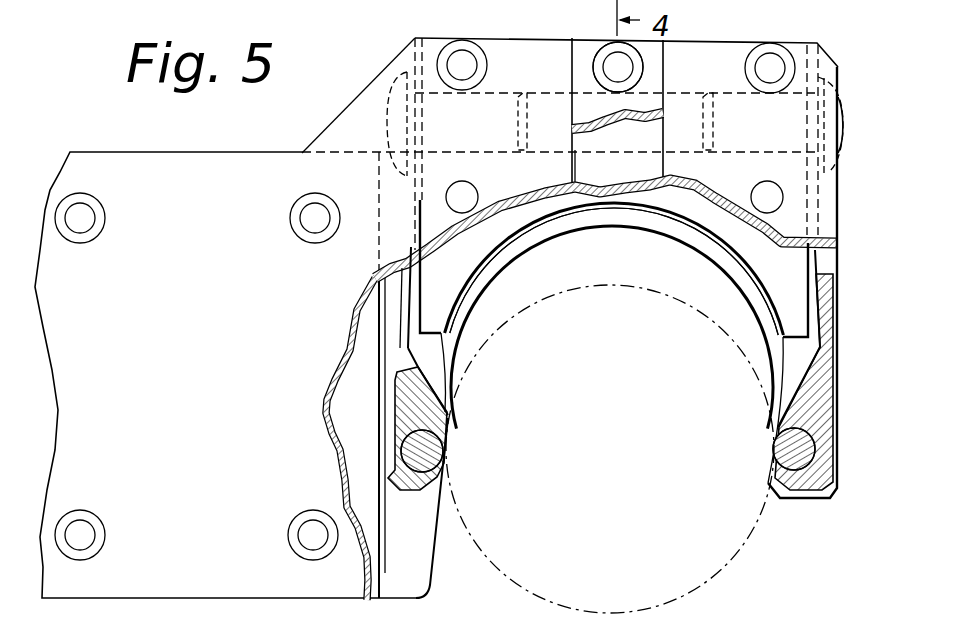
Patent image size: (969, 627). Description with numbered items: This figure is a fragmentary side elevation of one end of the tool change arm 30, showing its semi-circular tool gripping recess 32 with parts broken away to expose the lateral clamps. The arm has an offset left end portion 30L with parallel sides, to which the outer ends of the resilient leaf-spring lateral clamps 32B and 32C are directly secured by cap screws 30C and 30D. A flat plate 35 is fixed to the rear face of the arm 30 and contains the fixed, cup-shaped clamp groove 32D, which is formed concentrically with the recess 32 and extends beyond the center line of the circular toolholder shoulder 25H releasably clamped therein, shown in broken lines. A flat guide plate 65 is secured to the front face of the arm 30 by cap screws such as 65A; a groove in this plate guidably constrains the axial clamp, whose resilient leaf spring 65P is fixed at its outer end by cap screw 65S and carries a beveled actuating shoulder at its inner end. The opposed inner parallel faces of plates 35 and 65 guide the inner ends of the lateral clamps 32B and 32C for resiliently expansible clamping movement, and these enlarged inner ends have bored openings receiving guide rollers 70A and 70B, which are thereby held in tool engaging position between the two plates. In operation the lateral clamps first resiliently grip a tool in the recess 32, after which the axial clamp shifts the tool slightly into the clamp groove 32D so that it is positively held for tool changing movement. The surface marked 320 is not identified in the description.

The tool change arm 30 is at (210, 387).
The cap screw 30C is at (386, 113).
The cap screw 30D is at (848, 112).
The offset left end portion 30L is at (428, 370).
The semi-circular tool gripping recess 32 is at (712, 283).
The lateral tool clamp 32B is at (402, 296).
The lateral tool clamp 32C is at (822, 307).
The clamp groove 32D is at (447, 410).
The inner ring surface 320 is at (602, 212).
The flat plate 35 is at (458, 390).
The guide plate 65 is at (494, 200).
The cap screw 65S is at (593, 60).
The leaf spring 65P is at (650, 82).
The cap screw 65A is at (766, 93).
The guide roller 70A is at (440, 456).
The guide roller 70B is at (775, 448).
The circular toolholder shoulder 25H is at (724, 587).